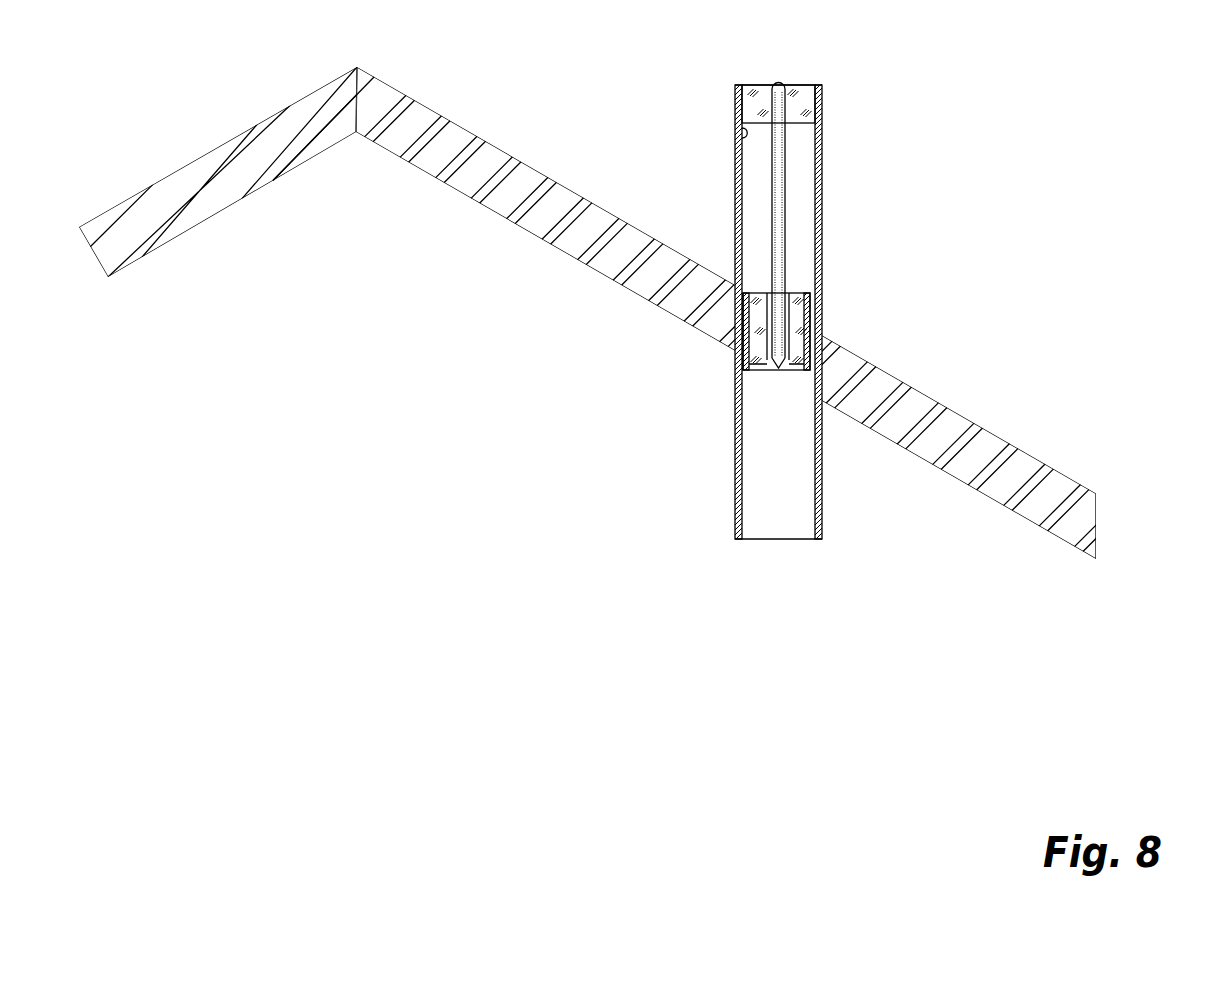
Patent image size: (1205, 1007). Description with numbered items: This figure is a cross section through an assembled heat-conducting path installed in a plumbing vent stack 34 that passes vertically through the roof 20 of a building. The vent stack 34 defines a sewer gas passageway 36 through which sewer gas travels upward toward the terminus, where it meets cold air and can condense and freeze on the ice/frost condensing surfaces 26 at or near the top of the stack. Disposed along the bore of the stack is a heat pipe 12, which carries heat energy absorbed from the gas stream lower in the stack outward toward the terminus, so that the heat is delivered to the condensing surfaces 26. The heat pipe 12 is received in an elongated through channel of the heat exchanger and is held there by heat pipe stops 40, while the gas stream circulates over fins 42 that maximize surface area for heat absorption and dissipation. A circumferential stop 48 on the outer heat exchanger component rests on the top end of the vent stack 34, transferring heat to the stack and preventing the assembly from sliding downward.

The heat pipe 12 is at (778, 173).
The roof 20 is at (917, 405).
The ice/frost condensing surfaces 26 is at (742, 135).
The vent stack 34 is at (822, 218).
The sewer gas passageway 36 is at (789, 482).
The heat pipe stops 40 is at (778, 372).
The fins 42 is at (803, 90).
The circumferential stop 48 is at (823, 87).